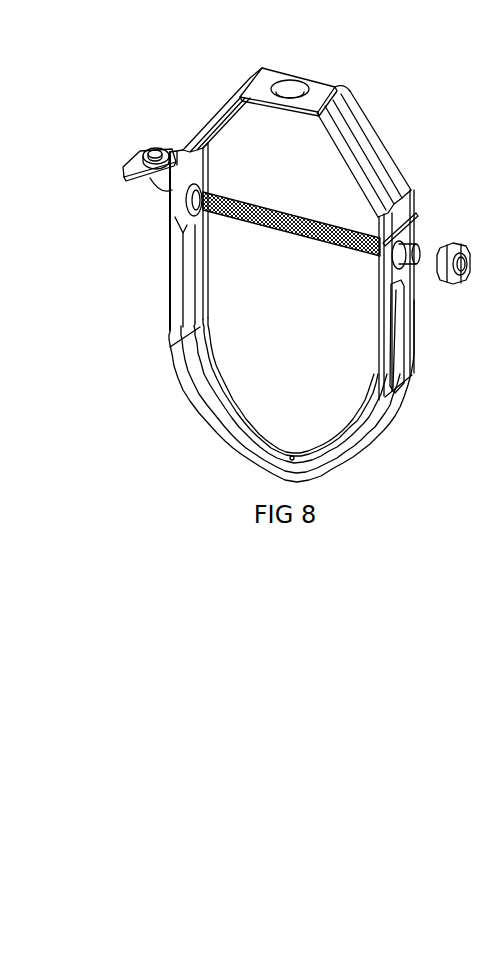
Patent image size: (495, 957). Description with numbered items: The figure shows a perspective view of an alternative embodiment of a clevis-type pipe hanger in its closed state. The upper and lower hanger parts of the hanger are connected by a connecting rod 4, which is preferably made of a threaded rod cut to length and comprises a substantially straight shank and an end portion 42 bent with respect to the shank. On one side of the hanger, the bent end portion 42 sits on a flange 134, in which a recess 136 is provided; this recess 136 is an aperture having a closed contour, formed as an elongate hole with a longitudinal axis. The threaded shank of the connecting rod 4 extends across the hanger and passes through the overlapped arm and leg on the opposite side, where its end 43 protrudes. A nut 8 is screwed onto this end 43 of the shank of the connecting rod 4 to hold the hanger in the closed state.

The connecting rod 4 is at (307, 240).
The nut 8 is at (458, 240).
The end portion 42 is at (157, 150).
The end of the shank 43 is at (412, 243).
The flange 134 is at (138, 168).
The recess 136 is at (143, 160).